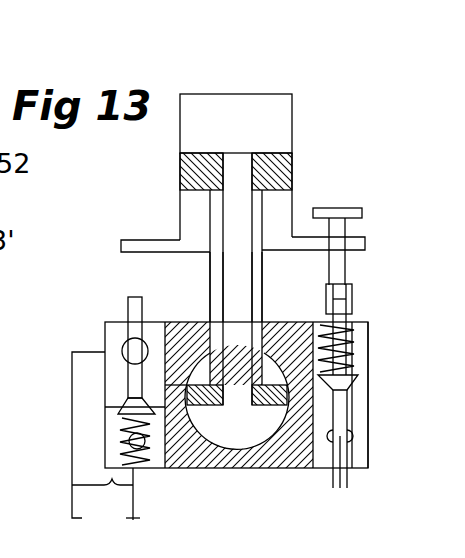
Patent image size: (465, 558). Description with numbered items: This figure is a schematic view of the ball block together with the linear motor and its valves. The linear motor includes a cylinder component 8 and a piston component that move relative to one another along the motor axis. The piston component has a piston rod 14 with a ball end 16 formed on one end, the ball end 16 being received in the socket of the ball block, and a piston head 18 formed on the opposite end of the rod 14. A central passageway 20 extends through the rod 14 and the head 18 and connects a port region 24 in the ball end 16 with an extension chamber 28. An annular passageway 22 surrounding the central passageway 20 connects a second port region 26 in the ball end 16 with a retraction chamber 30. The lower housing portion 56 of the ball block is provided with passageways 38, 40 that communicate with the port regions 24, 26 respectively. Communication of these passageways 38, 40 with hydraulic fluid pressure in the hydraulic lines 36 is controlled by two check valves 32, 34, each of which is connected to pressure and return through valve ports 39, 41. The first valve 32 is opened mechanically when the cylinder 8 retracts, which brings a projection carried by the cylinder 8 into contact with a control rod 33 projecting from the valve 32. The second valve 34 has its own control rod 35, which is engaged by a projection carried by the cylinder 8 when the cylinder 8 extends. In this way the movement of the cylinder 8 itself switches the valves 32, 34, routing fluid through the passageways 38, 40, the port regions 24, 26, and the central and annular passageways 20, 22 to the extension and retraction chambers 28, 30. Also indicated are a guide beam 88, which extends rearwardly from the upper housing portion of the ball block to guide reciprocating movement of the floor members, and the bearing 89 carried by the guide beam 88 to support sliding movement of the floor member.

The cylinder component 8 is at (304, 113).
The piston rod 14 is at (212, 284).
The ball end 16 is at (256, 470).
The piston head 18 is at (283, 173).
The central passageway 20 is at (253, 283).
The annular passageway 22 is at (258, 320).
The port region 24 is at (236, 436).
The port region 26 is at (205, 374).
The extension chamber 28 is at (192, 126).
The retraction chamber 30 is at (192, 210).
The check valve 32 is at (98, 340).
The control rod 33 is at (128, 312).
The check valve 34 is at (369, 412).
The control rod 35 is at (347, 278).
The hydraulic lines 36 is at (355, 352).
The passageway 38 is at (186, 462).
The valve port 39 is at (124, 355).
The passageway 40 is at (262, 446).
The valve port 41 is at (358, 350).
The lower housing portion 56 is at (222, 470).
The guide beam 88 is at (70, 520).
The bearing 89 is at (328, 556).